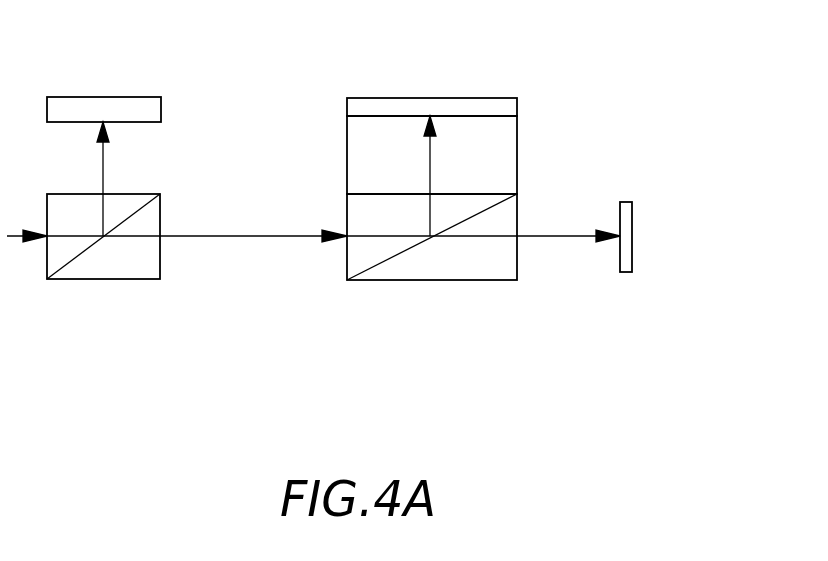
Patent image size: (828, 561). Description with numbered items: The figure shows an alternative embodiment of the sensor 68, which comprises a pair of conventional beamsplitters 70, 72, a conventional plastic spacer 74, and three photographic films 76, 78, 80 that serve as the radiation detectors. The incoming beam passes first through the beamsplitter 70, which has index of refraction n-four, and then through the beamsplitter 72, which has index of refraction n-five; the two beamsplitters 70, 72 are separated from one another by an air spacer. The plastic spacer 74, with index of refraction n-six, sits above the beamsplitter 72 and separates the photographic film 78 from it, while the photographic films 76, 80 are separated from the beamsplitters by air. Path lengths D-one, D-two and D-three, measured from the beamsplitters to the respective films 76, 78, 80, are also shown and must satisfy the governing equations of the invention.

The sensor 68 is at (612, 118).
The beamsplitter 70 is at (115, 281).
The beamsplitter 72 is at (445, 282).
The plastic spacer 74 is at (348, 156).
The photographic film 76 is at (635, 212).
The photographic film 78 is at (477, 98).
The photographic film 80 is at (128, 97).